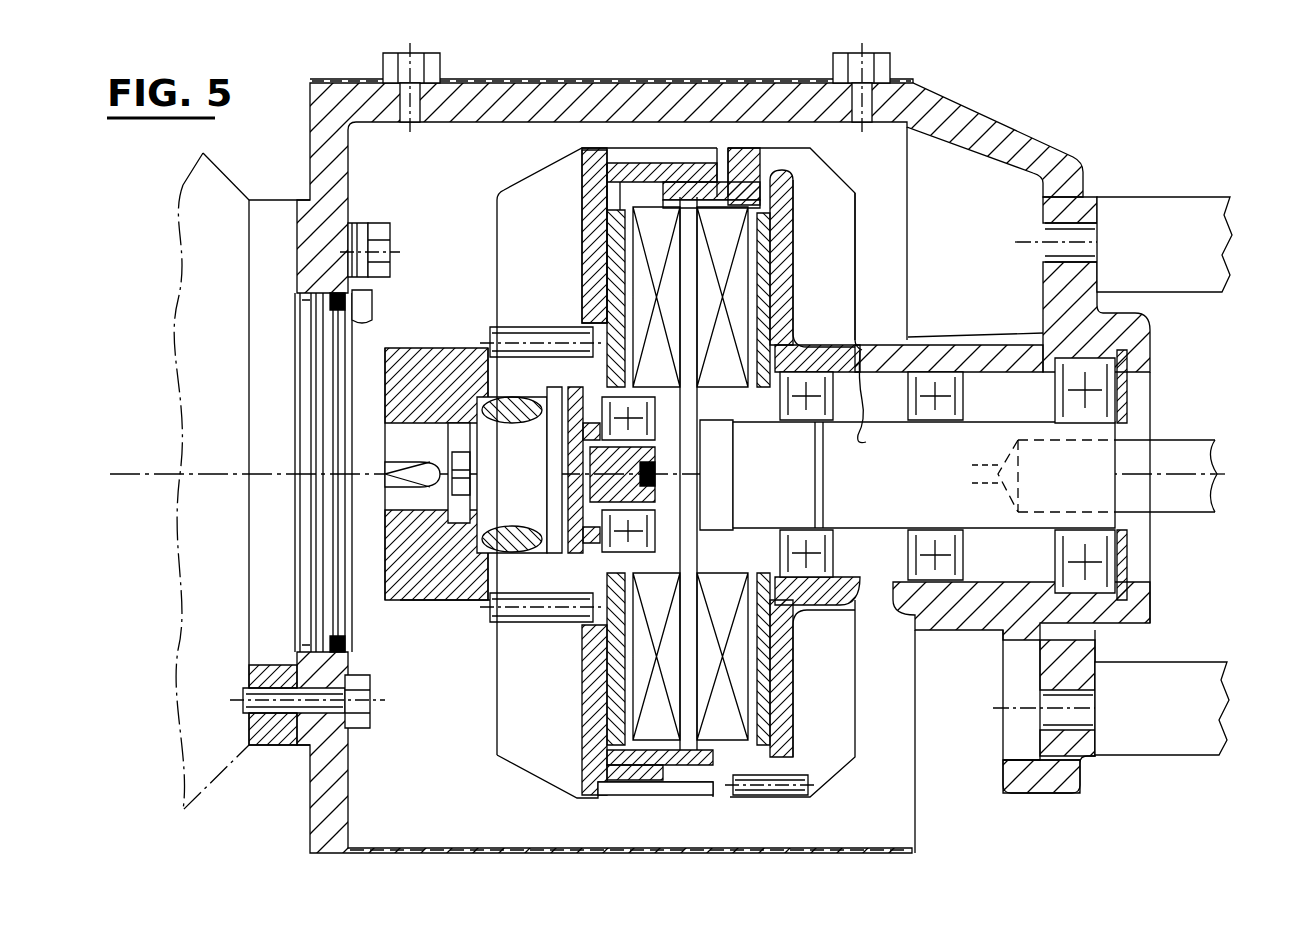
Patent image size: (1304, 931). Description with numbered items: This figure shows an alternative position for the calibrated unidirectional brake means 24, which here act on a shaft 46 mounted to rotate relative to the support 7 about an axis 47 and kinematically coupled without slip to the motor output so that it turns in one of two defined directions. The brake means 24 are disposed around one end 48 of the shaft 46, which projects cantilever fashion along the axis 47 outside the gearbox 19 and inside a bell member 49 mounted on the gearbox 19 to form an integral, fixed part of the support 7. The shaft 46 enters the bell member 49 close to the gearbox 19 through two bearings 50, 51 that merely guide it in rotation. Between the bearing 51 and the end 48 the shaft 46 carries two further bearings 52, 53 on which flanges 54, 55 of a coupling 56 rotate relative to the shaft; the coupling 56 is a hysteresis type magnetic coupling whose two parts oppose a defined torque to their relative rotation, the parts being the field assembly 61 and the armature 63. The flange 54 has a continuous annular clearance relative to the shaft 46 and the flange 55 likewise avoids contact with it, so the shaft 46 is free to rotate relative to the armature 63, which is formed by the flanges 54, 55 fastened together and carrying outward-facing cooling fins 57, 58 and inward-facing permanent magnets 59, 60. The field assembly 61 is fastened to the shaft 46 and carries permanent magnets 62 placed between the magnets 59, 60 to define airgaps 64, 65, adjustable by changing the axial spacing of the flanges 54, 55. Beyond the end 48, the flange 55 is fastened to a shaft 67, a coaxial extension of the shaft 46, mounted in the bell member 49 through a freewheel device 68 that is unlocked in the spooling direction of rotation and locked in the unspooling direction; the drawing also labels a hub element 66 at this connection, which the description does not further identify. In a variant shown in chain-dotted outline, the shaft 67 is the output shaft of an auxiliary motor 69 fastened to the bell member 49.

The support 7 is at (1013, 145).
The gearbox 19 is at (1144, 207).
The unidirectional brake means 24 is at (448, 785).
The shaft 46 is at (1192, 505).
The axis 47 is at (1240, 458).
The end of the shaft 48 is at (640, 497).
The bell member 49 is at (1063, 790).
The bearing 50 is at (1110, 405).
The bearing 51 is at (963, 395).
The bearing 52 is at (808, 370).
The bearing 53 is at (640, 413).
The flange 54 is at (790, 232).
The flange 55 is at (597, 238).
The coupling 56 is at (860, 420).
The cooling fin 57 is at (855, 290).
The cooling fin 58 is at (497, 250).
The permanent magnet 59 is at (770, 283).
The permanent magnet 60 is at (612, 293).
The field assembly 61 is at (725, 715).
The permanent magnet 62 is at (740, 670).
The armature 63 is at (540, 760).
The airgap 64 is at (750, 640).
The airgap 65 is at (607, 703).
The hub 66 is at (445, 612).
The shaft 67 is at (412, 600).
The freewheel device 68 is at (368, 318).
The auxiliary motor 69 is at (192, 205).